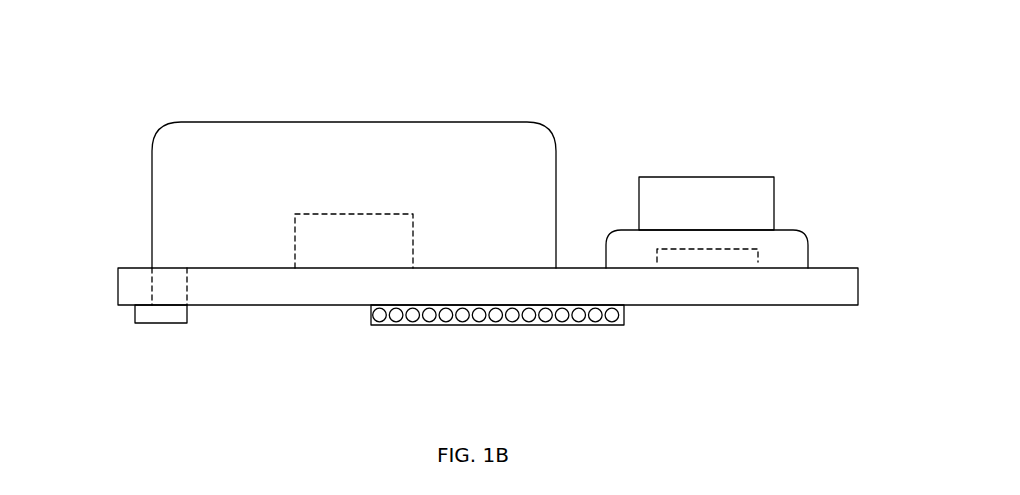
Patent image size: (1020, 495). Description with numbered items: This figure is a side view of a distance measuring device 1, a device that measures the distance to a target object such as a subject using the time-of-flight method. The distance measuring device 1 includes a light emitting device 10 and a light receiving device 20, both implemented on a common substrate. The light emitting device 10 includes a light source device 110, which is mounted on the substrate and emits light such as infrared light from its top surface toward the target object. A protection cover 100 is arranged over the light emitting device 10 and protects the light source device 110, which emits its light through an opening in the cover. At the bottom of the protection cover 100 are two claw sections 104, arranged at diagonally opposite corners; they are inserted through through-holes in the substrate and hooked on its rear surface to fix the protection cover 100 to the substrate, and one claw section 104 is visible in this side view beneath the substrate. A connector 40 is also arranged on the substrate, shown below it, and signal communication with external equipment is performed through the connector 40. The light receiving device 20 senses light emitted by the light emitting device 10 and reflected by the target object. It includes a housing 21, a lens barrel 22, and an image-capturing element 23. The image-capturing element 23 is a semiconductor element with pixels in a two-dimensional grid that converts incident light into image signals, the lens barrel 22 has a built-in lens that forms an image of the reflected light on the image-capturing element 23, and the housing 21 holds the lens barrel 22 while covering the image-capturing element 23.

The distance measuring device 1 is at (859, 98).
The light emitting device 10 is at (382, 152).
The protection cover 100 is at (440, 122).
The light source device 110 is at (340, 214).
The claw section 104 is at (150, 323).
The connector 40 is at (505, 325).
The light receiving device 20 is at (729, 186).
The housing 21 is at (807, 235).
The lens barrel 22 is at (742, 177).
The image-capturing element 23 is at (672, 249).